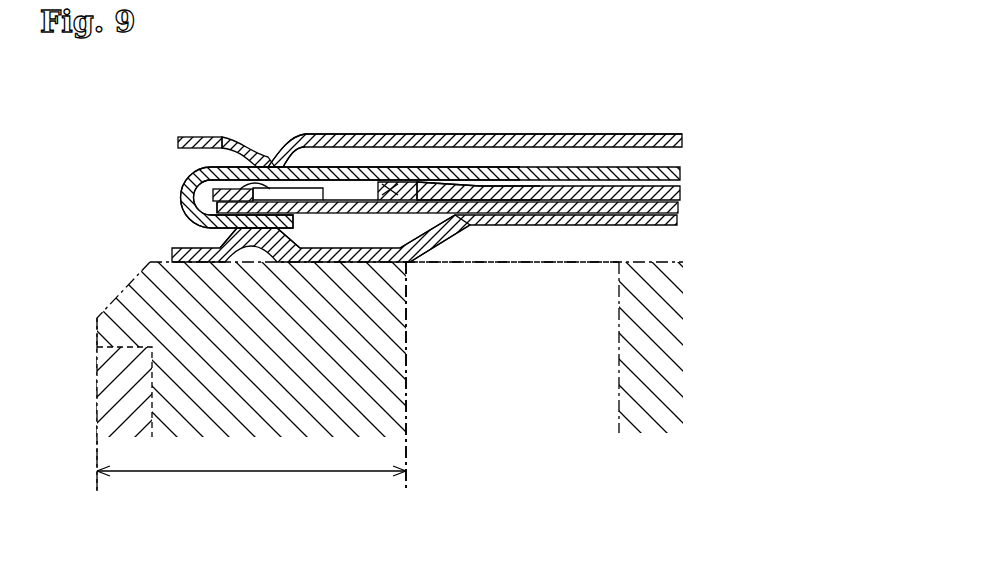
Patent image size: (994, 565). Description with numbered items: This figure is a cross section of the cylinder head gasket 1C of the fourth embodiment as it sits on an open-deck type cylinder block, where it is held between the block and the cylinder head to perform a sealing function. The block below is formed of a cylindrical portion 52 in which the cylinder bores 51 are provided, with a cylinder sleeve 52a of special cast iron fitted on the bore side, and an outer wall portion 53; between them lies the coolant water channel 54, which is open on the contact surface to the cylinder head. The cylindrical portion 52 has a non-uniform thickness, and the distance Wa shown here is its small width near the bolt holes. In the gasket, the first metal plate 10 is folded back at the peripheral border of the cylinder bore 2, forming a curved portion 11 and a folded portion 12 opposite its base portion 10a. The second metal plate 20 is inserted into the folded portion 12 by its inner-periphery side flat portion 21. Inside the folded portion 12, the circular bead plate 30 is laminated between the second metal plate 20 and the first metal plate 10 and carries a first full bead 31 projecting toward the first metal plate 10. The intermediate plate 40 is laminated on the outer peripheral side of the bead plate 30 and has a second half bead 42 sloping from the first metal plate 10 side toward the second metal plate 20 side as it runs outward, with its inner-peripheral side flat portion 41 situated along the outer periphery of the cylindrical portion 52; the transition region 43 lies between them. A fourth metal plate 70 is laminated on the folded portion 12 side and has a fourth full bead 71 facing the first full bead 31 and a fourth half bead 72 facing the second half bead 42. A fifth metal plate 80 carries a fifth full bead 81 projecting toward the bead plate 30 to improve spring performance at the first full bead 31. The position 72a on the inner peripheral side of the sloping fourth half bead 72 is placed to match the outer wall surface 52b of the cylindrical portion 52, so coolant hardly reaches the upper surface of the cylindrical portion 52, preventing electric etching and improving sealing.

The cylinder head gasket 1C is at (521, 133).
The cylinder bore 2 is at (152, 200).
The first metal plate 10 is at (683, 173).
The base portion 10a is at (457, 172).
The curved portion 11 is at (186, 179).
The folded portion 12 is at (222, 230).
The second metal plate 20 is at (680, 207).
The inner-periphery side flat portion 21 is at (265, 237).
The bead plate 30 is at (222, 137).
The first full bead 31 is at (250, 152).
The intermediate plate 40 is at (683, 193).
The inner-peripheral side flat portion 41 is at (378, 182).
The second half bead 42 is at (418, 181).
The tapered portion 43 is at (550, 193).
The cylinder bore 51 is at (44, 392).
The cylindrical portion 52 is at (344, 367).
The cylinder sleeve 52a is at (108, 395).
The outer wall surface 52b is at (406, 490).
The outer wall portion 53 is at (647, 365).
The coolant water channel 54 is at (486, 365).
The fourth metal plate 70 is at (678, 222).
The fourth full bead 71 is at (242, 262).
The fourth half bead 72 is at (440, 235).
The position of angular portion 72a is at (407, 263).
The fifth metal plate 80 is at (683, 140).
The fifth full bead 81 is at (266, 163).
The distance Wa is at (251, 460).